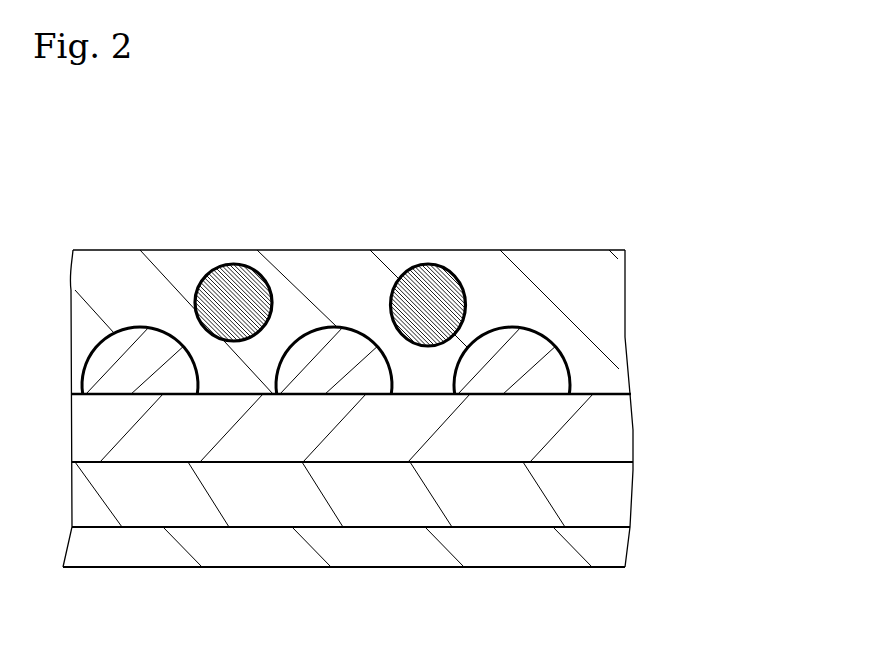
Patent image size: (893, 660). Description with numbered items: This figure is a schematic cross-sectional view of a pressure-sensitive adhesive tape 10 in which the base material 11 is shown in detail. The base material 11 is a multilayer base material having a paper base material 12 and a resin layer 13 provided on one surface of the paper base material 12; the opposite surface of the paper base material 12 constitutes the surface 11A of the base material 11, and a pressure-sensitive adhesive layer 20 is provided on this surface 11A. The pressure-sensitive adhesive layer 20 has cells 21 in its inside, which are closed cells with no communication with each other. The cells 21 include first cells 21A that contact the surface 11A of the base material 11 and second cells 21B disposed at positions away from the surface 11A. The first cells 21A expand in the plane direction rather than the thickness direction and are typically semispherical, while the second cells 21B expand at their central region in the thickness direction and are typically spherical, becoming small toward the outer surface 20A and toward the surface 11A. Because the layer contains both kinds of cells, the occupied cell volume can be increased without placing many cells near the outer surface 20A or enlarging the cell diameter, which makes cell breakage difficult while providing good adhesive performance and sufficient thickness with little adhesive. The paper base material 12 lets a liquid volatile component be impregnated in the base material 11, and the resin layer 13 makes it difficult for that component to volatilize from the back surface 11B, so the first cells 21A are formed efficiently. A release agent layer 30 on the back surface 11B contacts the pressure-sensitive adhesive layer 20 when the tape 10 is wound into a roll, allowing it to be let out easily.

The pressure-sensitive adhesive tape 10 is at (370, 195).
The base material 11 is at (432, 460).
The surface of the base material 11A is at (421, 393).
The back surface of the base material 11B is at (360, 527).
The paper base material 12 is at (593, 436).
The resin layer 13 is at (593, 478).
The pressure-sensitive adhesive layer 20 is at (583, 312).
The outer surface of the pressure-sensitive adhesive layer 20A is at (330, 250).
The cells 21 is at (326, 257).
The first cells 21A is at (97, 352).
The second cells 21B is at (244, 283).
The release agent layer 30 is at (583, 555).